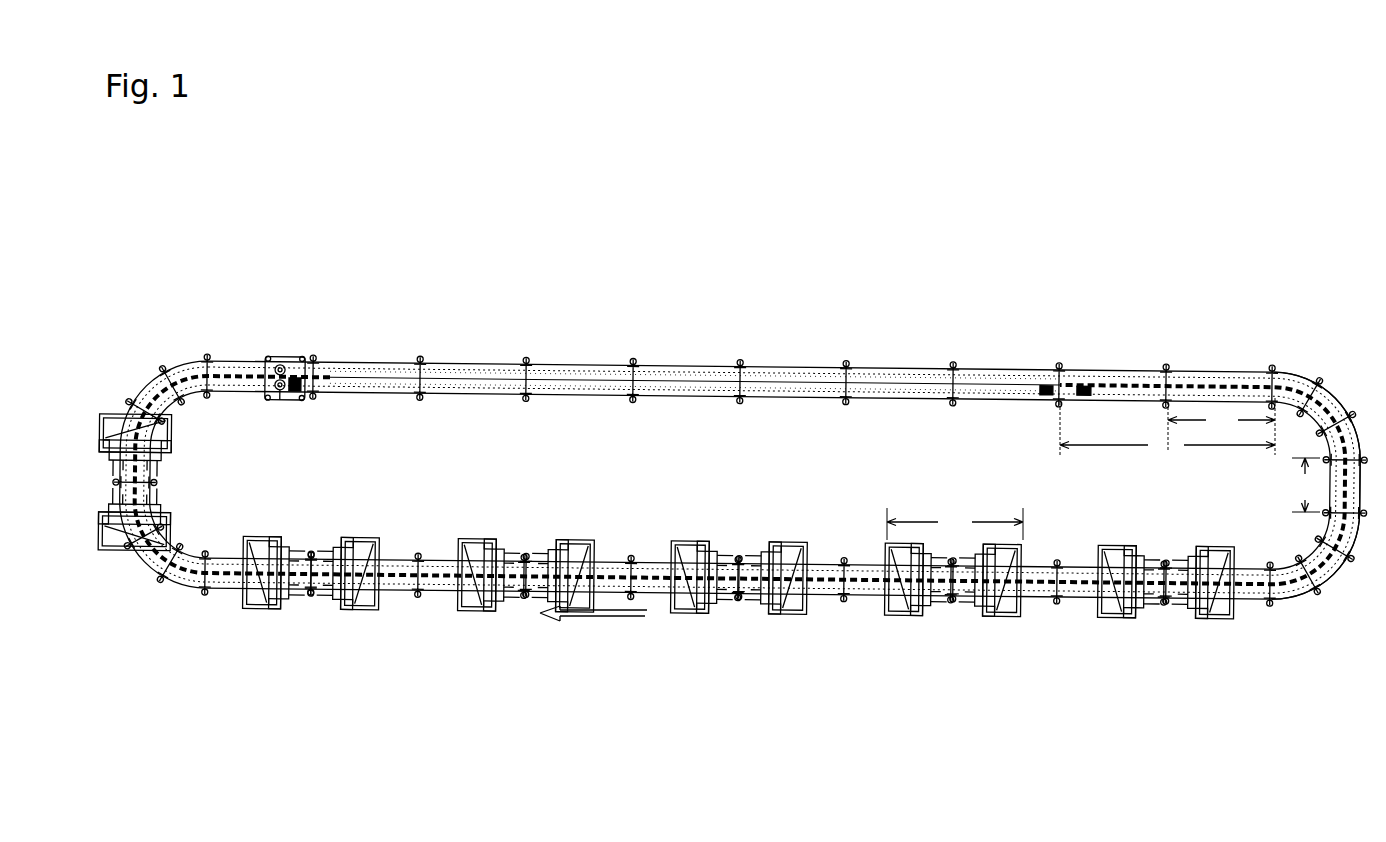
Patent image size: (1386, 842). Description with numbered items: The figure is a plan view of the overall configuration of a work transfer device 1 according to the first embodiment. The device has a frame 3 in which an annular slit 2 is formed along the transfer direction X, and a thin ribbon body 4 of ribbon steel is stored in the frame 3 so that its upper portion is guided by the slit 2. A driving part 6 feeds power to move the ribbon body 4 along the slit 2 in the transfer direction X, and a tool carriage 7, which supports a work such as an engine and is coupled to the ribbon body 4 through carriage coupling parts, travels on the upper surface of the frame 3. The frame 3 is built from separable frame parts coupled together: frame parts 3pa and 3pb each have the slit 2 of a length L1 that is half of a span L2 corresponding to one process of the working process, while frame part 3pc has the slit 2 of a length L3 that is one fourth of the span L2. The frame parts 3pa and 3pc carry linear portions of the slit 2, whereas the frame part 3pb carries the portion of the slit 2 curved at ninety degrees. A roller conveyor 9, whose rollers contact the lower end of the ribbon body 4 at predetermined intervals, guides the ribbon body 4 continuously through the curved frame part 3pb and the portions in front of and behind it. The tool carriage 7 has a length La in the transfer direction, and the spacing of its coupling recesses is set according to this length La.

The work transfer device 1 is at (273, 680).
The slit 2 is at (385, 375).
The ribbon body 4 is at (740, 480).
The frame 3 is at (1365, 276).
The frame part 3pa is at (1212, 368).
The frame part 3pb is at (1305, 375).
The frame part 3pc is at (1362, 490).
The driving part 6 is at (285, 360).
The tool carriage 7 is at (886, 613).
The roller conveyor 9 is at (925, 378).
The transfer direction X is at (609, 620).
The slit length of frame parts 3pa, 3pb L1 is at (1221, 426).
The span L2 is at (1167, 431).
The slit length of frame part 3pc L3 is at (1306, 485).
The length of tool carriage La is at (955, 523).